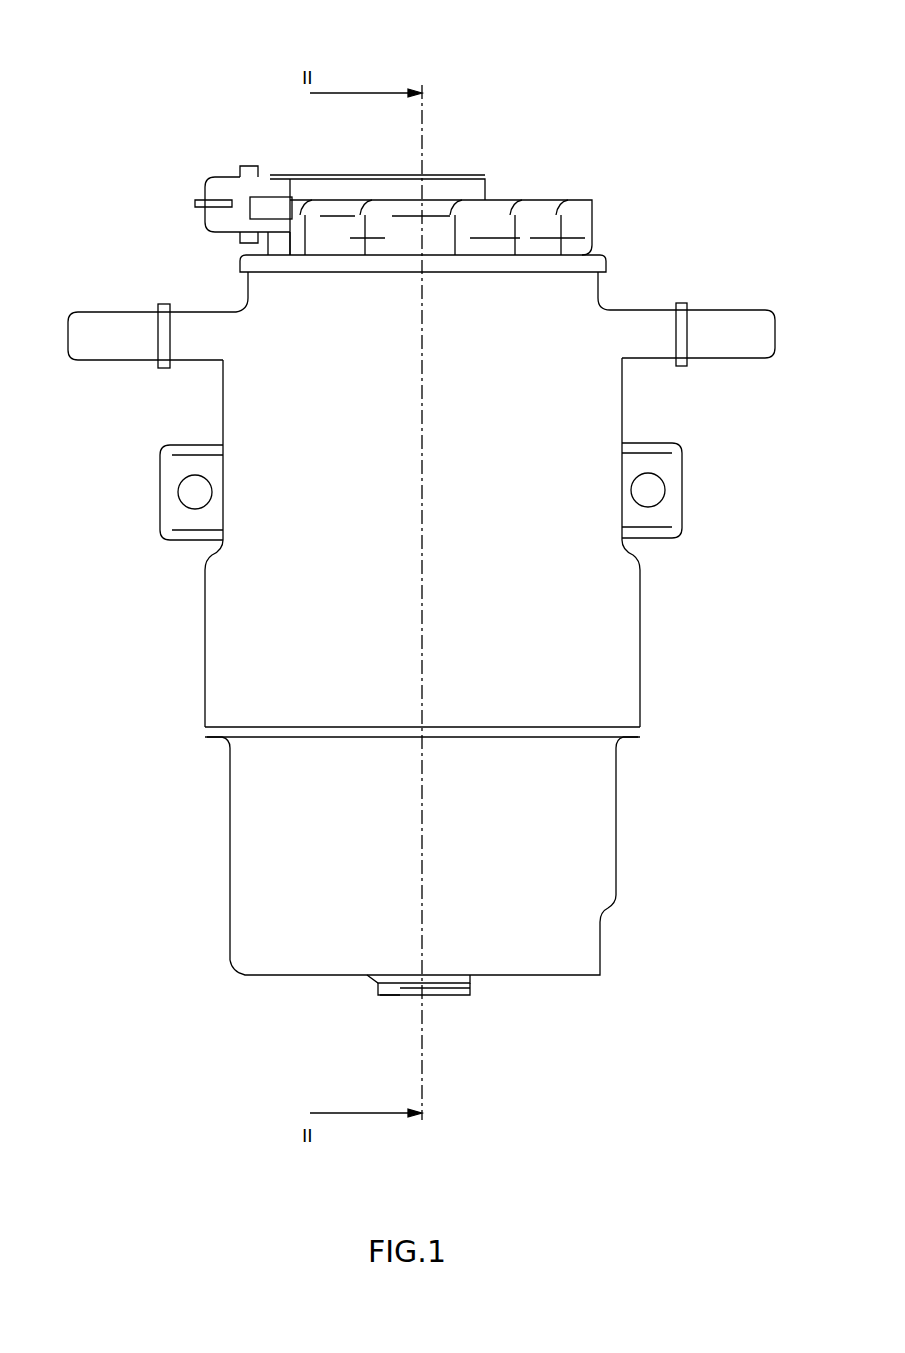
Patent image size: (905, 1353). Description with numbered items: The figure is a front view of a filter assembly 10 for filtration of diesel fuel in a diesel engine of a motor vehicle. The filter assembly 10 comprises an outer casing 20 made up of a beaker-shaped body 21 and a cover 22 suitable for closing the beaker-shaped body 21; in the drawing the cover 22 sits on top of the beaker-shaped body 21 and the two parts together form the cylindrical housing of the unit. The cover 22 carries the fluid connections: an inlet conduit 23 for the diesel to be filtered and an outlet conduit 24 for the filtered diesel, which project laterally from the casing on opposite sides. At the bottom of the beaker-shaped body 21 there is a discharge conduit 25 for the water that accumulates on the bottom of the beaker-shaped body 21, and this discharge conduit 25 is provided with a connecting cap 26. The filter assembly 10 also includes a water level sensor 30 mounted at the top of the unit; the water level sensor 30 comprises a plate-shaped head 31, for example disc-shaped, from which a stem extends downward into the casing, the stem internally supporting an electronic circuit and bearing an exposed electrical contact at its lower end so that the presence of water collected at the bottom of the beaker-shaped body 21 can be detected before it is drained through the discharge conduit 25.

The filter assembly 10 is at (143, 115).
The outer casing 20 is at (178, 563).
The beaker-shaped body 21 is at (578, 818).
The cover 22 is at (580, 440).
The inlet conduit 23 is at (147, 330).
The outlet conduit 24 is at (735, 322).
The discharge conduit 25 is at (428, 997).
The connecting cap 26 is at (402, 990).
The water level sensor 30 is at (506, 199).
The plate-shaped head 31 is at (543, 205).